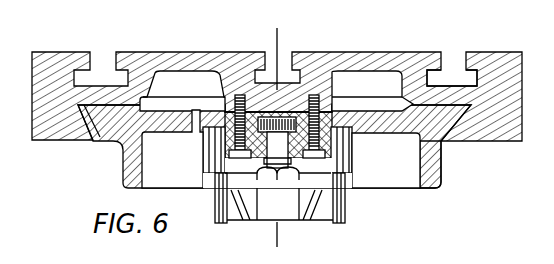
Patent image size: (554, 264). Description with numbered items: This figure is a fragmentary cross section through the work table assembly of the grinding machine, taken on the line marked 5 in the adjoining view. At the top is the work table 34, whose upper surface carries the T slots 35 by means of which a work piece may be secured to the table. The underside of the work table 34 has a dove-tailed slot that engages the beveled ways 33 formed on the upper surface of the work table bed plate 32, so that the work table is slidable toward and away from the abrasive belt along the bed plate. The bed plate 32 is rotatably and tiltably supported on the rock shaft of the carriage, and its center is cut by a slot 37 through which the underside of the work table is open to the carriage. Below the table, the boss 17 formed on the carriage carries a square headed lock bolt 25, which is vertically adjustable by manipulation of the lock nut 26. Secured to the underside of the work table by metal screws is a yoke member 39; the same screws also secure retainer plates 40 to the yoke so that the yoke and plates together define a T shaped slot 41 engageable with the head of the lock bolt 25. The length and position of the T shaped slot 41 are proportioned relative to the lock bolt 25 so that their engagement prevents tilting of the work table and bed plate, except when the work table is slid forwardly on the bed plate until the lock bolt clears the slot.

The section line 5- 5 is at (270, 28).
The boss 17 is at (343, 205).
The lock bolt 25 is at (284, 116).
The lock nut 26 is at (292, 184).
The work table bed plate 32 is at (438, 128).
The beveled ways 33 is at (471, 141).
The work table 34 is at (500, 66).
The T slots 35 is at (437, 77).
The slot 37 is at (355, 123).
The yoke member 39 is at (331, 118).
The retainer plates 40 is at (338, 160).
The T shaped slot 41 is at (250, 134).